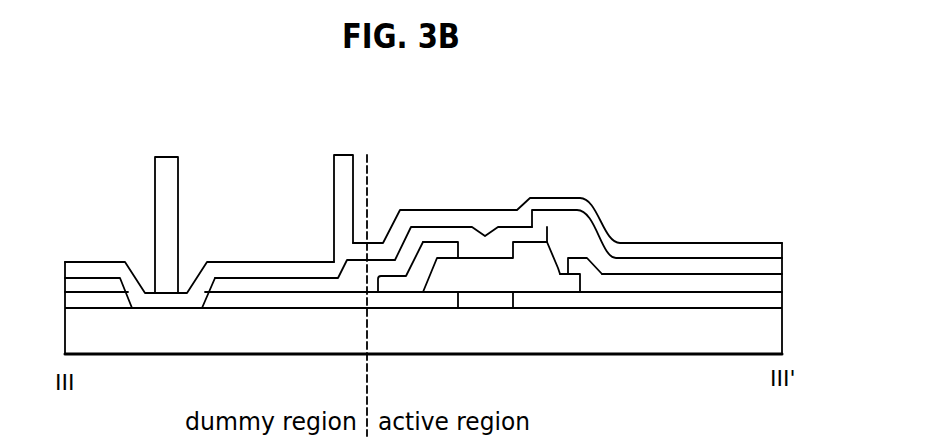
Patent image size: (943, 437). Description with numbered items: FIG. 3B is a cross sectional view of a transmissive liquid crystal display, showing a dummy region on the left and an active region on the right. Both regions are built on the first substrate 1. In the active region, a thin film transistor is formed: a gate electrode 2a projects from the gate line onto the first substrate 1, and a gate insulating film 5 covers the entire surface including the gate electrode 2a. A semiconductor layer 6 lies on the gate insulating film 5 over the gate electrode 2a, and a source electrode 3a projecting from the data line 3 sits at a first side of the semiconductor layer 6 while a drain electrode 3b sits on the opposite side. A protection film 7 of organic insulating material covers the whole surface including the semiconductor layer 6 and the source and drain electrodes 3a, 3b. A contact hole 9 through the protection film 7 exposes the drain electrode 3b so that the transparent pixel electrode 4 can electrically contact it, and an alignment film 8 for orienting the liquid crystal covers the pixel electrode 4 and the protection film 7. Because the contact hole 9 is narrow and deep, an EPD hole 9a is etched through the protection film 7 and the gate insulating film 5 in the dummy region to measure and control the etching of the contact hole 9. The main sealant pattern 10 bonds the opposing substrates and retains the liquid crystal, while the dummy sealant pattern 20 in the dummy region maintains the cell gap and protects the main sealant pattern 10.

The first substrate 1 is at (283, 340).
The gate electrode 2a is at (474, 300).
The data line 3 is at (400, 283).
The source electrode 3a is at (445, 250).
The drain electrode 3b is at (563, 283).
The pixel electrode 4 is at (700, 265).
The gate insulating film 5 is at (725, 300).
The semiconductor layer 6 is at (435, 283).
The protection film 7 is at (658, 283).
The alignment film 8 is at (558, 204).
The contact hole 9 is at (563, 250).
The EPD hole 9a is at (184, 293).
The main sealant pattern 10 is at (338, 177).
The dummy sealant pattern 20 is at (160, 178).